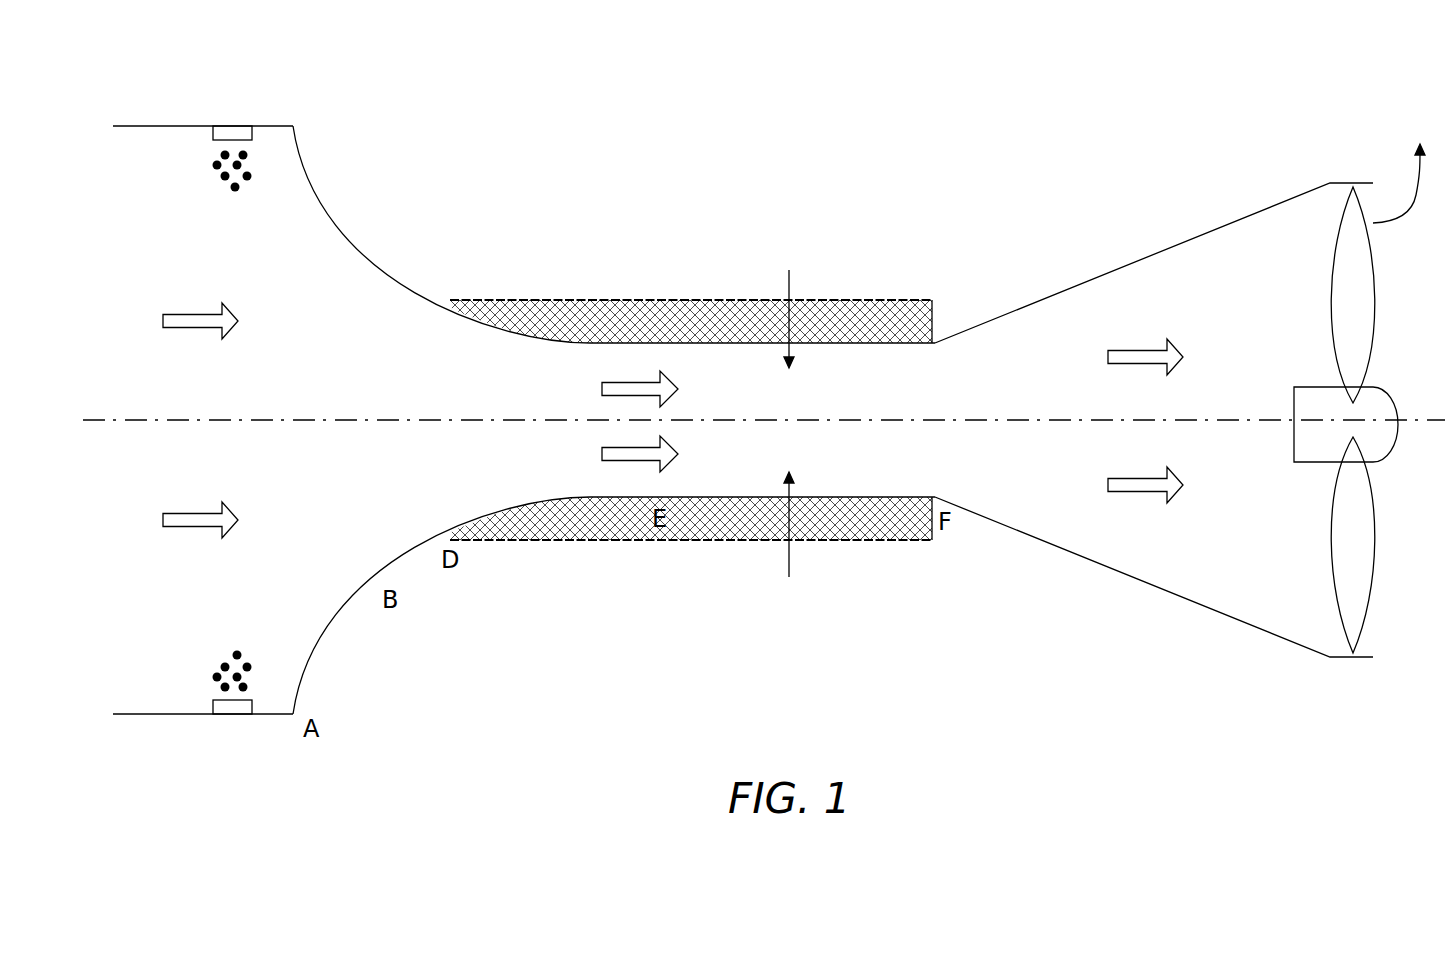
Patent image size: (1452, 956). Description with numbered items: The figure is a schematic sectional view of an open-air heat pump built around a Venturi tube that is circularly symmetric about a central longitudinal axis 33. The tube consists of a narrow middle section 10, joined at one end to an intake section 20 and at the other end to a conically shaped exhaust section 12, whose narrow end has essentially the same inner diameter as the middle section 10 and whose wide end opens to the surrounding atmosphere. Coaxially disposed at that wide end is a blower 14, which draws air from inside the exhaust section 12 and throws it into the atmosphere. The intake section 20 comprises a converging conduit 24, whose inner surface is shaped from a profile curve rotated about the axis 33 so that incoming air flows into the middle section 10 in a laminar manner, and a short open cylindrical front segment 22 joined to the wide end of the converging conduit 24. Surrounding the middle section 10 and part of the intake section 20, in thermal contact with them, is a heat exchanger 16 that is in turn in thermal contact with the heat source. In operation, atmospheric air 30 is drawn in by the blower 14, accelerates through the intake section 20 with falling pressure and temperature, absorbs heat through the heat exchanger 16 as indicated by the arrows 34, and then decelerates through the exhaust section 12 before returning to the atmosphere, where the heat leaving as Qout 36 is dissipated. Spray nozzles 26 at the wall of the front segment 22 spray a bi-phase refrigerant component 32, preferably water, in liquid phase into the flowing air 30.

The middle section 10 is at (931, 298).
The exhaust section 12 is at (1115, 267).
The blower 14 is at (1376, 298).
The heat exchanger 16 is at (677, 387).
The intake section 20 is at (381, 264).
The front segment 22 is at (158, 126).
The converging conduit 24 is at (422, 290).
The spray nozzles 26 is at (239, 126).
The atmospheric air 30 is at (186, 317).
The bi-phase refrigerant component 32 is at (238, 195).
The central longitudinal axis 33 is at (107, 423).
The arrows 34 is at (805, 238).
The heat output Qout 36 is at (1425, 118).